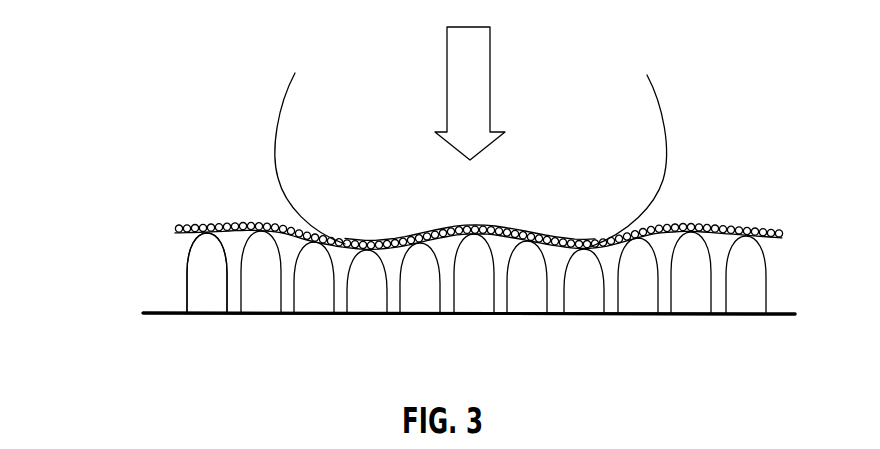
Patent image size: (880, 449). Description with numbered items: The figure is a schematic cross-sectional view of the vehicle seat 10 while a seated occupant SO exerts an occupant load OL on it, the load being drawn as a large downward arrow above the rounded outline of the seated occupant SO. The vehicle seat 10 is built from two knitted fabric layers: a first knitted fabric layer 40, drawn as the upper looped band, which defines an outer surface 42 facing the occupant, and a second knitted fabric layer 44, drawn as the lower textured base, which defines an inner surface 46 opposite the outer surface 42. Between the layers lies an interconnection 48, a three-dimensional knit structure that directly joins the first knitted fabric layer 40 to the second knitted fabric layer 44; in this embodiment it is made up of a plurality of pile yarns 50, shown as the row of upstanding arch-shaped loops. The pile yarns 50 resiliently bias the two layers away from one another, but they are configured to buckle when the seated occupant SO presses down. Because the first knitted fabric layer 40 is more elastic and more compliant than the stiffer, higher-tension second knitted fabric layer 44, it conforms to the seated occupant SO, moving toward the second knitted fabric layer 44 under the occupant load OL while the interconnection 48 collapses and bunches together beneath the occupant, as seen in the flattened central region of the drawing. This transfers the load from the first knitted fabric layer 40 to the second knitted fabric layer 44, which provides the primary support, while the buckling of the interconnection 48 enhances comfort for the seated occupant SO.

The vehicle seat 10 is at (123, 136).
The first knitted fabric layer 40 is at (468, 198).
The outer surface 42 is at (258, 214).
The second knitted fabric layer 44 is at (223, 316).
The inner surface 46 is at (306, 324).
The interconnection 48 is at (192, 260).
The pile yarns 50 is at (217, 259).
The occupant load OL is at (490, 59).
The seated occupant SO is at (667, 123).